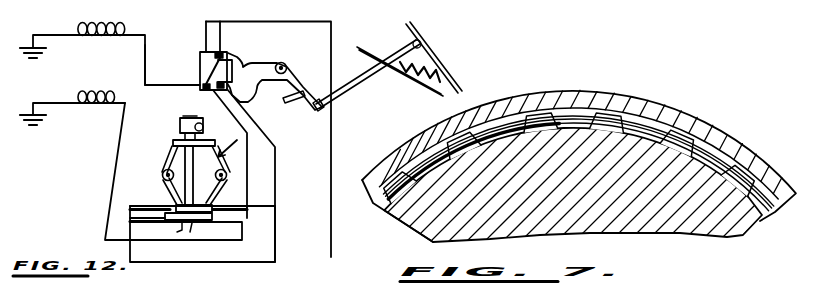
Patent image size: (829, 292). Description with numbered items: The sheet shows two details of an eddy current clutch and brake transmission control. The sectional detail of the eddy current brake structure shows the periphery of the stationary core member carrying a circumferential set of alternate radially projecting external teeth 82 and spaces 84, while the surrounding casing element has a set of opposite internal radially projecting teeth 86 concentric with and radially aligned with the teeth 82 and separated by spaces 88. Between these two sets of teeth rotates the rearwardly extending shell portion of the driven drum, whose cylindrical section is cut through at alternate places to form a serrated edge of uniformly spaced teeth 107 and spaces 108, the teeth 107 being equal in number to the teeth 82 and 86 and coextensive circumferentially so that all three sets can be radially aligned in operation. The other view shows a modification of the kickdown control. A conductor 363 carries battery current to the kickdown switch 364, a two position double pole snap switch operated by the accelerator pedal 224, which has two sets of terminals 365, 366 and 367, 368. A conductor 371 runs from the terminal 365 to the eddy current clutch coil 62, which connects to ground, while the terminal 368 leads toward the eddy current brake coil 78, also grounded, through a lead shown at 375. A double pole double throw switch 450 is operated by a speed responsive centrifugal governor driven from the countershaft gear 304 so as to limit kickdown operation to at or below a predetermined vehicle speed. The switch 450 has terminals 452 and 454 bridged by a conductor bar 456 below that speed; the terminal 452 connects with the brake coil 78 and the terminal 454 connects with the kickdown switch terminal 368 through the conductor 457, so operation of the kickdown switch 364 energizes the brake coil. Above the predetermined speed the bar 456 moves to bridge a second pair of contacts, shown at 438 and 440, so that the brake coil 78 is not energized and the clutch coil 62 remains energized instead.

In FIG. 12, the eddy current clutch coil 62 is at (102, 19).
In FIG. 12, the eddy current brake coil 78 is at (104, 90).
In FIG. 12, the conductor 371 is at (146, 58).
In FIG. 12, the lead wire 375 is at (117, 162).
In FIG. 12, the kickdown switch 364 is at (199, 71).
In FIG. 12, the terminal 365 is at (201, 89).
In FIG. 12, the terminal 366 is at (226, 55).
In FIG. 12, the terminal 367 is at (210, 55).
In FIG. 12, the terminal 368 is at (234, 97).
In FIG. 12, the conductor 363 is at (344, 103).
In FIG. 12, the accelerator pedal 224 is at (440, 57).
In FIG. 12, the countershaft gear 304 is at (208, 113).
In FIG. 12, the contact 438 is at (156, 204).
In FIG. 12, the contact 440 is at (222, 206).
In FIG. 12, the double pole double throw switch 450 is at (179, 228).
In FIG. 12, the terminal 452 is at (232, 218).
In FIG. 12, the terminal 454 is at (186, 231).
In FIG. 12, the conductor bar 456 is at (207, 232).
In FIG. 12, the conductor 457 is at (276, 186).
In FIG. 7, the external teeth 82 is at (430, 148).
In FIG. 7, the spaces 84 is at (382, 168).
In FIG. 7, the internal teeth 86 is at (667, 122).
In FIG. 7, the spaces 88 is at (689, 125).
In FIG. 7, the teeth 107 is at (503, 115).
In FIG. 7, the spaces 108 is at (546, 112).